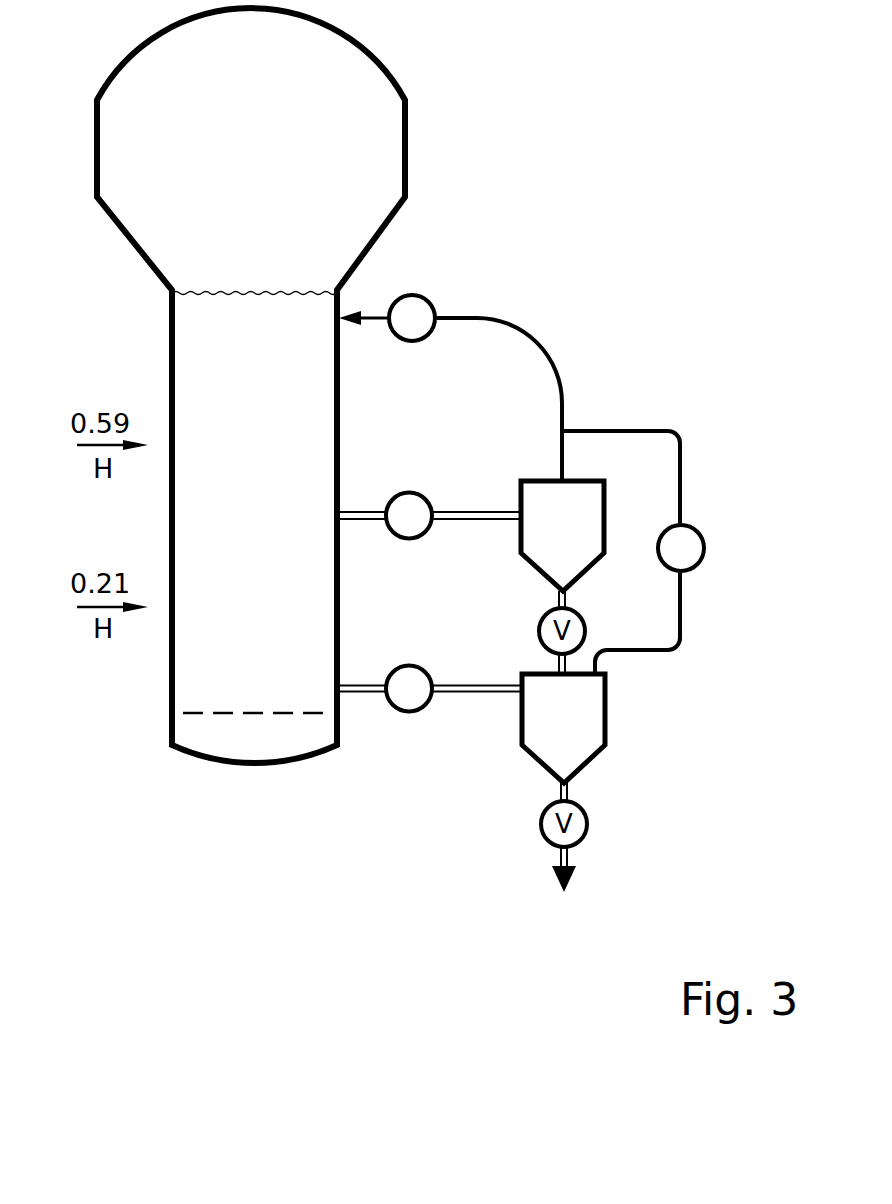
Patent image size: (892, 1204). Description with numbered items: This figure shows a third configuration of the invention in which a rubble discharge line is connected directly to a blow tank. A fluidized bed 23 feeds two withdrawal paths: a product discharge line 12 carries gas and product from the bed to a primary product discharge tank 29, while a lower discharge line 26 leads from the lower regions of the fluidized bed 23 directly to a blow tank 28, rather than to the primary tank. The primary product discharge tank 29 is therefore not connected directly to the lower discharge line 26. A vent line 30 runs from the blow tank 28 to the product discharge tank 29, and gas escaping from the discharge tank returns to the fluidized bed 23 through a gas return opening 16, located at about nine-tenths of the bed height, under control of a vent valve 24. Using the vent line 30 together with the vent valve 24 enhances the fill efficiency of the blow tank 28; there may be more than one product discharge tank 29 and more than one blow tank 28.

The fluidized bed 23 is at (282, 405).
The gas return opening 16 is at (344, 314).
The vent valve 24 is at (430, 303).
The product discharge line 12 is at (455, 511).
The lower discharge line 26 is at (455, 684).
The primary product discharge tank 29 is at (584, 542).
The blow tank 28 is at (585, 735).
The vent line 30 is at (683, 500).